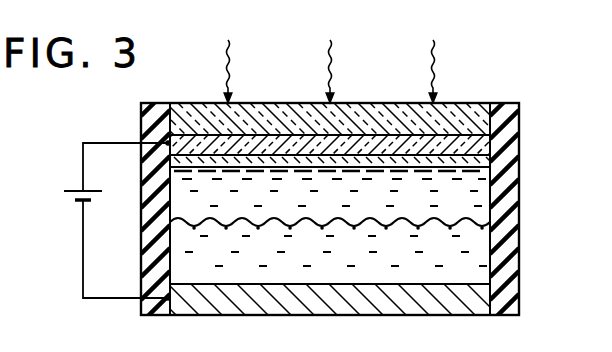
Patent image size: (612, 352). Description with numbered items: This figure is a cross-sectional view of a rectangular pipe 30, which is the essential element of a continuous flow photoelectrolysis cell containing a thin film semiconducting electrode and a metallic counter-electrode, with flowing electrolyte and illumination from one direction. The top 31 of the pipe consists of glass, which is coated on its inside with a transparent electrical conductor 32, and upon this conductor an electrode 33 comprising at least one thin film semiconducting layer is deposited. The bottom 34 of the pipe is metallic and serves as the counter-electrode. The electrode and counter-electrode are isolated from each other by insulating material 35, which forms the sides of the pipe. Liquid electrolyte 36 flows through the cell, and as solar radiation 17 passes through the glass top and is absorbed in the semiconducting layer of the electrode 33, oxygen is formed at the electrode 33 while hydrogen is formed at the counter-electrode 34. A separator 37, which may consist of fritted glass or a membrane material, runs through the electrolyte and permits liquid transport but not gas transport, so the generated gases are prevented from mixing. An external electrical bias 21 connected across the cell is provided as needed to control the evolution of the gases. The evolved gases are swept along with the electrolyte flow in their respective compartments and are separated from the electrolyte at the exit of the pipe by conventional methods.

The solar radiation 17 is at (333, 71).
The external electrical bias 21 is at (75, 190).
The rectangular pipe 30 is at (519, 234).
The top of the pipe 31 is at (461, 118).
The transparent electrical conductor 32 is at (480, 145).
The electrode 33 is at (481, 165).
The bottom of the pipe 34 is at (413, 305).
The insulating material 35 is at (508, 297).
The liquid electrolyte 36 is at (476, 203).
The separator 37 is at (352, 226).